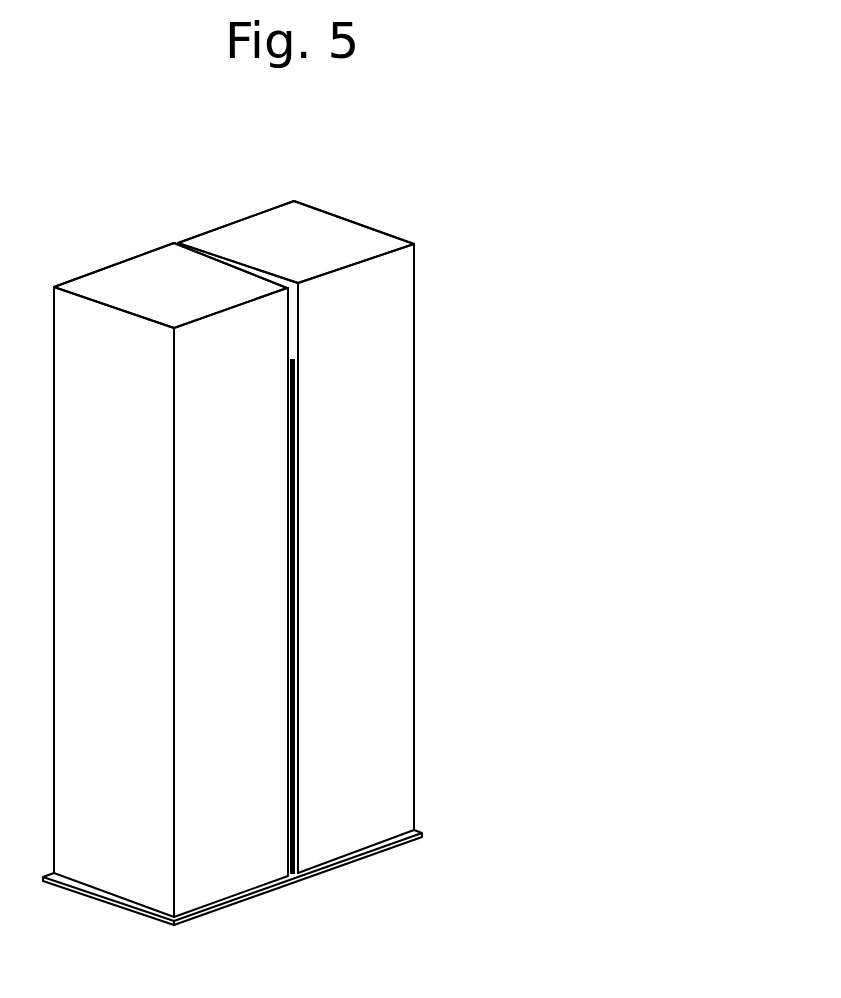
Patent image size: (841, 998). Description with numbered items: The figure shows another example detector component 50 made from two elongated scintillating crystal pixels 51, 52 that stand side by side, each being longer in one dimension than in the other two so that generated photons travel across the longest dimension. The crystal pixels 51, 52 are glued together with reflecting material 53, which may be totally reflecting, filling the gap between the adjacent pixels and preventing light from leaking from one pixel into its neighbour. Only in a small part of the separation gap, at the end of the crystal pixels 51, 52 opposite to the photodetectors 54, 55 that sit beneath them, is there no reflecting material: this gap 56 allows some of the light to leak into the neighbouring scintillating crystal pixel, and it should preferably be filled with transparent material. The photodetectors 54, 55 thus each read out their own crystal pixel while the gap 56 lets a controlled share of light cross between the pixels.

The detector component 50 is at (442, 178).
The scintillating crystal pixel 51 is at (100, 250).
The scintillating crystal pixel 52 is at (216, 215).
The reflecting material 53 is at (292, 539).
The photodetector 54 is at (247, 898).
The photodetector 55 is at (367, 855).
The gap 56 is at (282, 315).